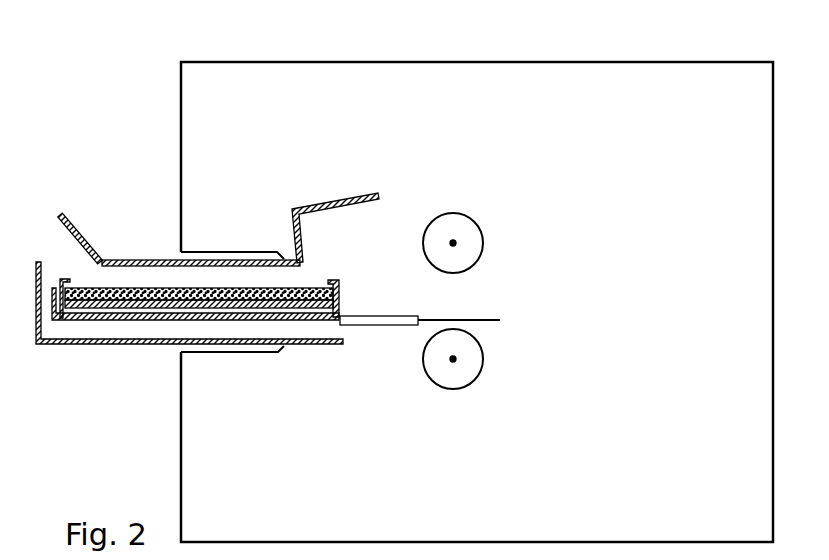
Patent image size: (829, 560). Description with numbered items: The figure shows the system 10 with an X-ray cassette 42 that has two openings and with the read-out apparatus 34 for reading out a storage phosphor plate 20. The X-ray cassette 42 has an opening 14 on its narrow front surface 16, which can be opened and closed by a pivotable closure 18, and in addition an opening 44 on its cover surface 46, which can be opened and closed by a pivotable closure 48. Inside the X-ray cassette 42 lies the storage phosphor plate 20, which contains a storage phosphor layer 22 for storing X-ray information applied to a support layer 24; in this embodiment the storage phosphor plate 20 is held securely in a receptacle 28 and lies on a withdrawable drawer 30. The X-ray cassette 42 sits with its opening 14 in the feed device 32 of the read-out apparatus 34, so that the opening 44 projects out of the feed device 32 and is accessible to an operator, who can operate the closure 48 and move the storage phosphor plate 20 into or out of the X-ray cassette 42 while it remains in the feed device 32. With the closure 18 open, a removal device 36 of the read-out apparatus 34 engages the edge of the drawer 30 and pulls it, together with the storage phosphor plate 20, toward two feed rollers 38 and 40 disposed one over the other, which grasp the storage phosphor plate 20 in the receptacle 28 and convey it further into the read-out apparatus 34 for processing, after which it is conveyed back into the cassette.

The system 10 is at (65, 158).
The opening 14 is at (405, 205).
The front surface 16 is at (372, 290).
The closure 18 is at (296, 236).
The storage phosphor plate 20 is at (331, 275).
The storage phosphor layer 22 is at (147, 300).
The support layer 24 is at (78, 322).
The receptacle 28 is at (60, 281).
The drawer 30 is at (98, 322).
The feed device 32 is at (177, 355).
The read-out apparatus 34 is at (515, 61).
The removal device 36 is at (378, 326).
The feed roller 38 is at (480, 232).
The feed roller 40 is at (482, 352).
The X-ray cassette 42 is at (45, 346).
The opening 44 is at (52, 228).
The cover surface 46 is at (125, 258).
The closure 48 is at (70, 216).